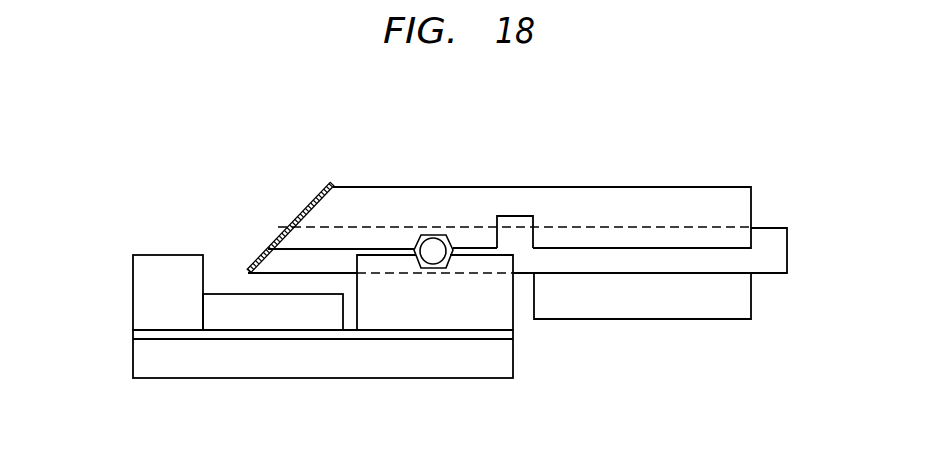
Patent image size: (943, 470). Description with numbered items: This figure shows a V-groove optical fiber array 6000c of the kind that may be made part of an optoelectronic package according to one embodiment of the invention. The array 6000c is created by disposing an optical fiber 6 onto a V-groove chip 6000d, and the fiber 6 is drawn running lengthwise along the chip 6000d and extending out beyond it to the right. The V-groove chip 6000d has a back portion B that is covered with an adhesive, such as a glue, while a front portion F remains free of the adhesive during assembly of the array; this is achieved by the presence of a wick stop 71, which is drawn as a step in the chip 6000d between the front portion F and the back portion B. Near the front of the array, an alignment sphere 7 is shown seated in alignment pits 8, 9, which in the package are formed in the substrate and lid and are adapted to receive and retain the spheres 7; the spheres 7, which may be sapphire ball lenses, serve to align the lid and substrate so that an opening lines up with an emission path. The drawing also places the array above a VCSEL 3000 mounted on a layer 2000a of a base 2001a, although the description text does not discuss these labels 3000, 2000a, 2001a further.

The VCSEL 3000 is at (228, 293).
The submount layer 2000a is at (140, 333).
The base 2001a is at (215, 382).
The front portion F is at (352, 275).
The alignment spheres 7 is at (431, 249).
The alignment pits 8 is at (438, 236).
The alignment pits 9 is at (447, 268).
The wick stop 71 is at (524, 216).
The back portion B is at (598, 248).
The V-groove chip 6000d is at (676, 186).
The V-groove optical fiber array 6000c is at (802, 222).
The optical fiber 6 is at (770, 274).